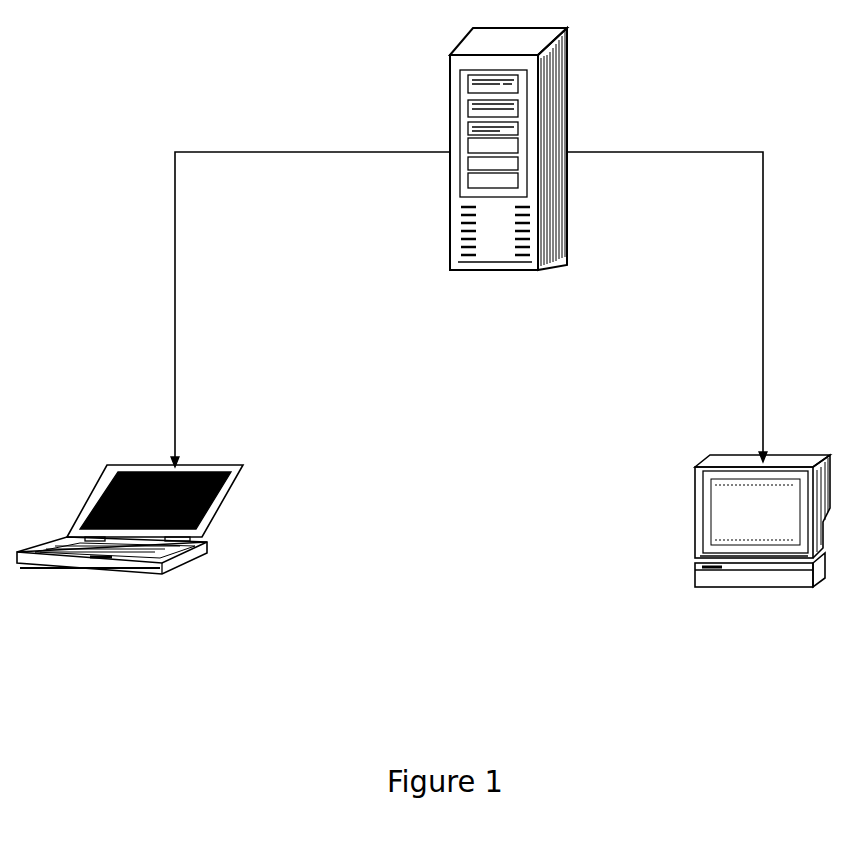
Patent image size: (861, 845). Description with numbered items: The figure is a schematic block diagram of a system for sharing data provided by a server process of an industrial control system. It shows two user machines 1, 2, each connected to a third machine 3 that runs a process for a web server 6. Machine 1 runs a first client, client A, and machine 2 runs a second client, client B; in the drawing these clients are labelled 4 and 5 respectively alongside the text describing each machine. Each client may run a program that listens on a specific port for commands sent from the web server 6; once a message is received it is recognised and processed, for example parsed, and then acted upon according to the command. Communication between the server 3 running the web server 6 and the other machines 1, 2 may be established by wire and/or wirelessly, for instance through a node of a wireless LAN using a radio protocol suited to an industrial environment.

The user machine 1 is at (128, 495).
The user machine 2 is at (780, 463).
The third machine 3 is at (558, 130).
The client A program running on machine 1 4 is at (85, 682).
The client B program running on machine 2 5 is at (643, 703).
The web server 6 is at (485, 380).